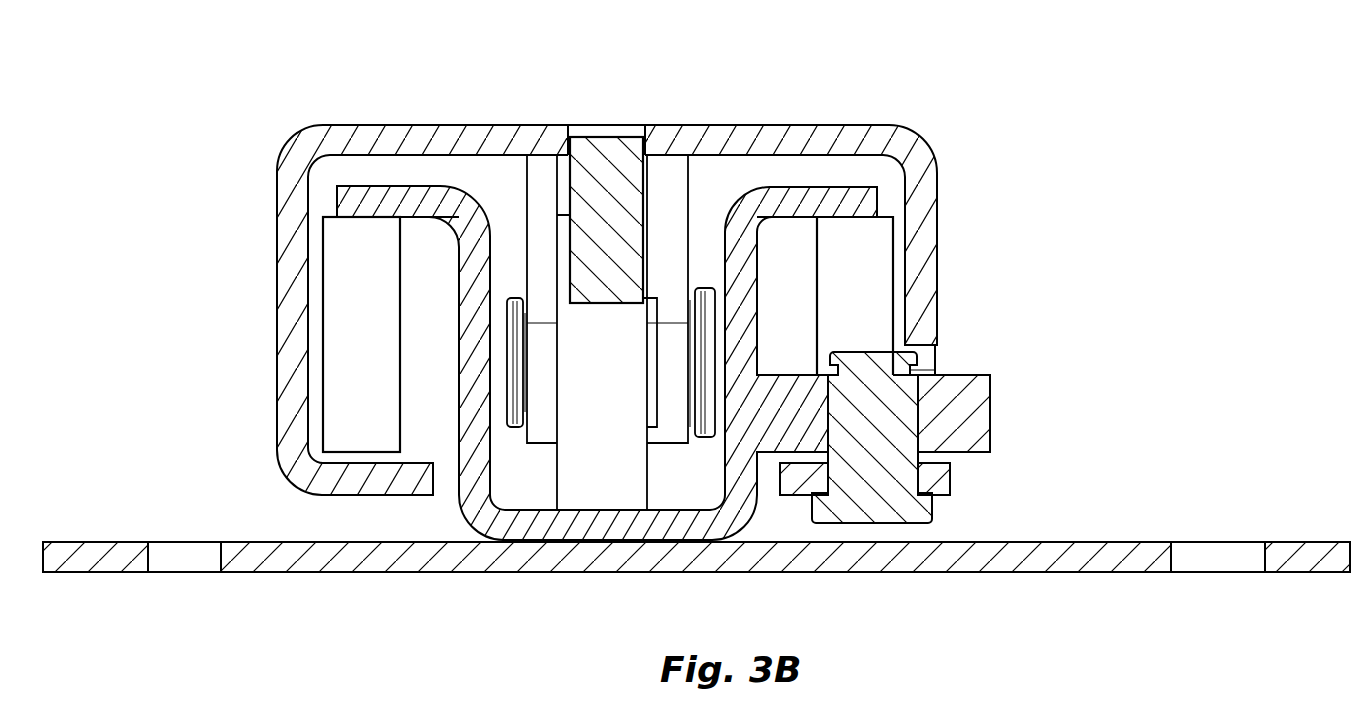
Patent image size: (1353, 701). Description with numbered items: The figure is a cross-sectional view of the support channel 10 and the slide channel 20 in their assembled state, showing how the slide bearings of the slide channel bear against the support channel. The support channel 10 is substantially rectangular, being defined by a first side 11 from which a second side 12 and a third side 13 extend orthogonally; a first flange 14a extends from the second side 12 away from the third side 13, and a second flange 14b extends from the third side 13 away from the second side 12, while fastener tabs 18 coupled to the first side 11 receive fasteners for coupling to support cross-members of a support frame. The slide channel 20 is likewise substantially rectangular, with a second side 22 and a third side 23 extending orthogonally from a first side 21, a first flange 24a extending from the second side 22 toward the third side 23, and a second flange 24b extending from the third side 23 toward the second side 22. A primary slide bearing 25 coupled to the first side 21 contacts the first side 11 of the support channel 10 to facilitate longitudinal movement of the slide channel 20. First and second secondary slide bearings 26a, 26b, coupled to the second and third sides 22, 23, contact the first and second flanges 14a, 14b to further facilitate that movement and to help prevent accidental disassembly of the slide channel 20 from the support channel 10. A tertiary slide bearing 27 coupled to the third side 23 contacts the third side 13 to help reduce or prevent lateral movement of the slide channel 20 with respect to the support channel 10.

The support channel 10 is at (748, 582).
The first side 11 is at (663, 528).
The second side 12 is at (468, 458).
The third side 13 is at (730, 263).
The first flange 14a is at (370, 193).
The second flange 14b is at (828, 192).
The fastener tabs 18 is at (983, 582).
The slide channel 20 is at (963, 70).
The first side 21 is at (441, 132).
The second side 22 is at (290, 314).
The third side 23 is at (928, 318).
The first flange 24a is at (372, 488).
The second flange 24b is at (800, 490).
The primary slide bearing 25 is at (592, 492).
The first secondary slide bearing 26a is at (335, 277).
The second secondary slide bearing 26b is at (878, 278).
The tertiary slide bearing 27 is at (985, 420).